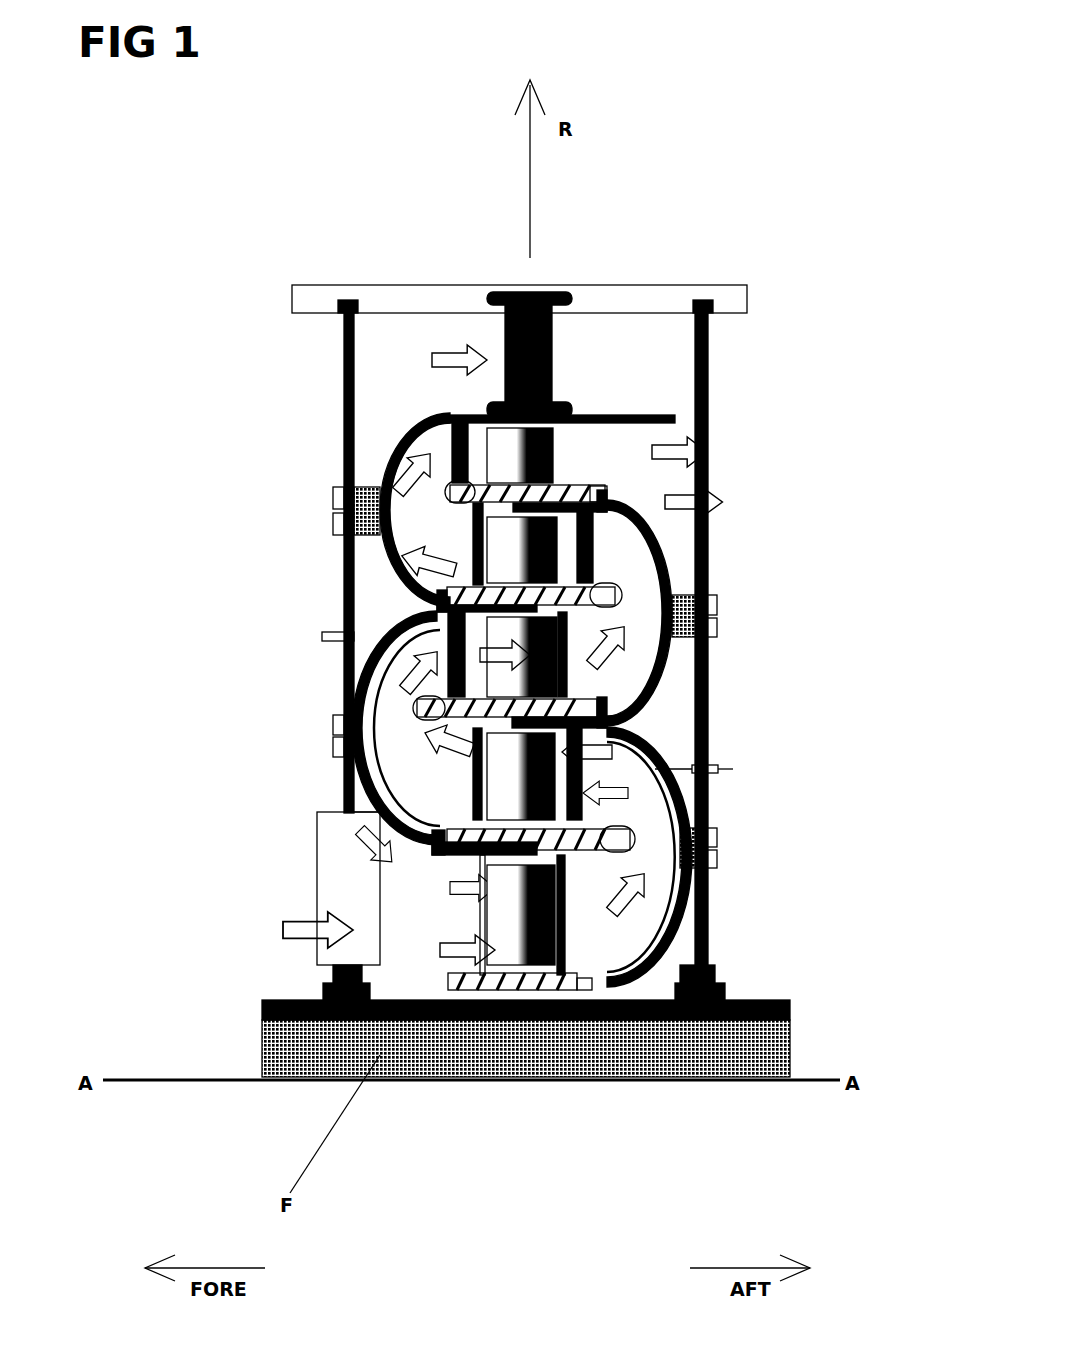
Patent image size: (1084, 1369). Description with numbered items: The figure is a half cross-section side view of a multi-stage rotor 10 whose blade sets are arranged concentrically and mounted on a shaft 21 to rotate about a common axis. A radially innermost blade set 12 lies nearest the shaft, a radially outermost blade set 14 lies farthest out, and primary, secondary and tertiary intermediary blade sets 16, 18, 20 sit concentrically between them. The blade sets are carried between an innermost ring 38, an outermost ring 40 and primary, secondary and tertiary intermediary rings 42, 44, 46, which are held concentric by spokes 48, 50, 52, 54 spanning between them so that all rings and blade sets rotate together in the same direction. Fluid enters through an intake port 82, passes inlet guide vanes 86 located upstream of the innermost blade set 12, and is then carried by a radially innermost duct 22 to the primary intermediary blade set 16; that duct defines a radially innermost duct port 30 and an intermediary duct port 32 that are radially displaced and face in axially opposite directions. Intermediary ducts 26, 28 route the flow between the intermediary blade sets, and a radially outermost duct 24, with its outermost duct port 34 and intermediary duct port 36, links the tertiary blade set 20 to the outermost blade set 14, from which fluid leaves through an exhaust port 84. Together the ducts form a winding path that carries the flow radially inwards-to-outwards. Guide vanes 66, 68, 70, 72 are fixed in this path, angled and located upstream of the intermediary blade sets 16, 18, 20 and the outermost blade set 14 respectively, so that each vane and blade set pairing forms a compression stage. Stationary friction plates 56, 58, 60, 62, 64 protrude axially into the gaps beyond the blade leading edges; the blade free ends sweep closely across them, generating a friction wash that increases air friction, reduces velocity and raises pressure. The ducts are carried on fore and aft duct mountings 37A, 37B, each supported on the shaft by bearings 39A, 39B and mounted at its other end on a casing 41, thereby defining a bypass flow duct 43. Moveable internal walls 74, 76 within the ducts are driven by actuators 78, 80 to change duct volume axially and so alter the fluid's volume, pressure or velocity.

The multi-stage rotor 10 is at (318, 255).
The radially innermost blade set 12 is at (373, 1043).
The radially outermost blade set 14 is at (497, 455).
The primary intermediary blade set 16 is at (522, 790).
The secondary intermediary blade set 18 is at (510, 672).
The tertiary intermediary blade set 20 is at (455, 557).
The shaft 21 is at (285, 1050).
The radially innermost duct 22 is at (712, 1075).
The radially outermost duct 24 is at (450, 478).
The intermediary duct 26 is at (447, 675).
The intermediary duct 28 is at (670, 575).
The radially innermost duct port 30 is at (603, 930).
The intermediary duct port 32 is at (612, 807).
The outermost duct port 34 is at (440, 470).
The intermediary duct port 36 is at (410, 510).
The fore duct mounting 37A is at (344, 340).
The aft duct mounting 37B is at (707, 713).
The innermost ring 38 is at (450, 1045).
The bearing 39A is at (340, 1062).
The bearing 39B is at (700, 1062).
The outermost ring 40 is at (344, 482).
The casing 41 is at (348, 303).
The primary intermediary ring 42 is at (605, 848).
The bypass flow duct 43 is at (427, 290).
The secondary intermediary ring 44 is at (340, 745).
The tertiary intermediary ring 46 is at (672, 612).
The spoke 48 is at (540, 1040).
The spoke 50 is at (473, 773).
The spoke 52 is at (567, 677).
The spoke 54 is at (470, 536).
The friction plate 56 is at (380, 865).
The friction plate 58 is at (565, 722).
The friction plate 60 is at (455, 600).
The friction plate 62 is at (600, 493).
The friction plate 64 is at (560, 410).
The guide vane 66 is at (620, 838).
The guide vane 68 is at (430, 625).
The guide vane 70 is at (668, 565).
The guide vane 72 is at (455, 432).
The moveable internal wall 74 is at (590, 808).
The moveable internal wall 76 is at (390, 790).
The actuator 78 is at (718, 768).
The actuator 80 is at (340, 637).
The intake port 82 is at (420, 937).
The exhaust port 84 is at (600, 460).
The inlet guide vanes 86 is at (410, 838).